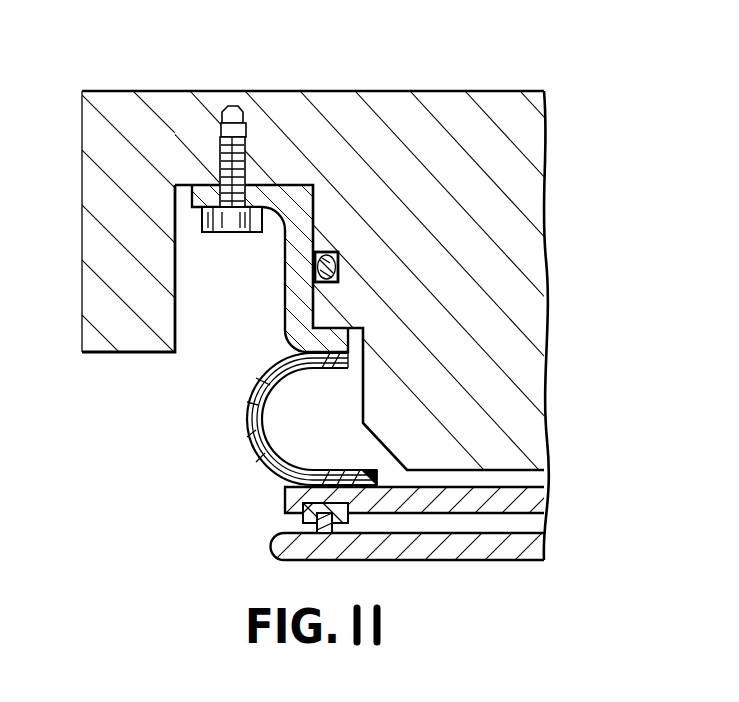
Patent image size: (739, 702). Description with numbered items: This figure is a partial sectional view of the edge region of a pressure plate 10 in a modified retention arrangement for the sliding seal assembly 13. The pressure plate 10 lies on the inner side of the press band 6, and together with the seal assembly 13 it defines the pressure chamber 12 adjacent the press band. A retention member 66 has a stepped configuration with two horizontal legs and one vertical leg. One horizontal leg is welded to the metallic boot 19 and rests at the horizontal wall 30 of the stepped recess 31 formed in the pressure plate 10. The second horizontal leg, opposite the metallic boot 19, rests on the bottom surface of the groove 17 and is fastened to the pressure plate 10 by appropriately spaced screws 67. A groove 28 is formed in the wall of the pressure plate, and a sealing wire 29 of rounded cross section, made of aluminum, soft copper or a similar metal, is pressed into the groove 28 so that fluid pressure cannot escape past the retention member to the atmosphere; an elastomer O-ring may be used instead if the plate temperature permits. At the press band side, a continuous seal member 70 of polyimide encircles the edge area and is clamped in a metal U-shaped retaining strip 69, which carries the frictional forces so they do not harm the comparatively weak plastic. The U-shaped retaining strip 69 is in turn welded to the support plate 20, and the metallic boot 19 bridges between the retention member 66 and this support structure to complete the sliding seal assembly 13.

The press band 6 is at (478, 543).
The pressure plate 10 is at (505, 100).
The pressure chamber 12 is at (500, 523).
The sliding seal assembly 13 is at (196, 423).
The groove 17 is at (193, 294).
The metallic boot 19 is at (253, 450).
The support plate 20 is at (295, 500).
The groove 28 is at (340, 270).
The sealing wire 29 is at (330, 250).
The horizontal wall 30 is at (362, 334).
The stepped recess 31 is at (341, 374).
The retention member 66 is at (293, 307).
The screw 67 is at (245, 137).
The U-shaped retaining strip 69 is at (303, 521).
The seal member 70 is at (330, 533).